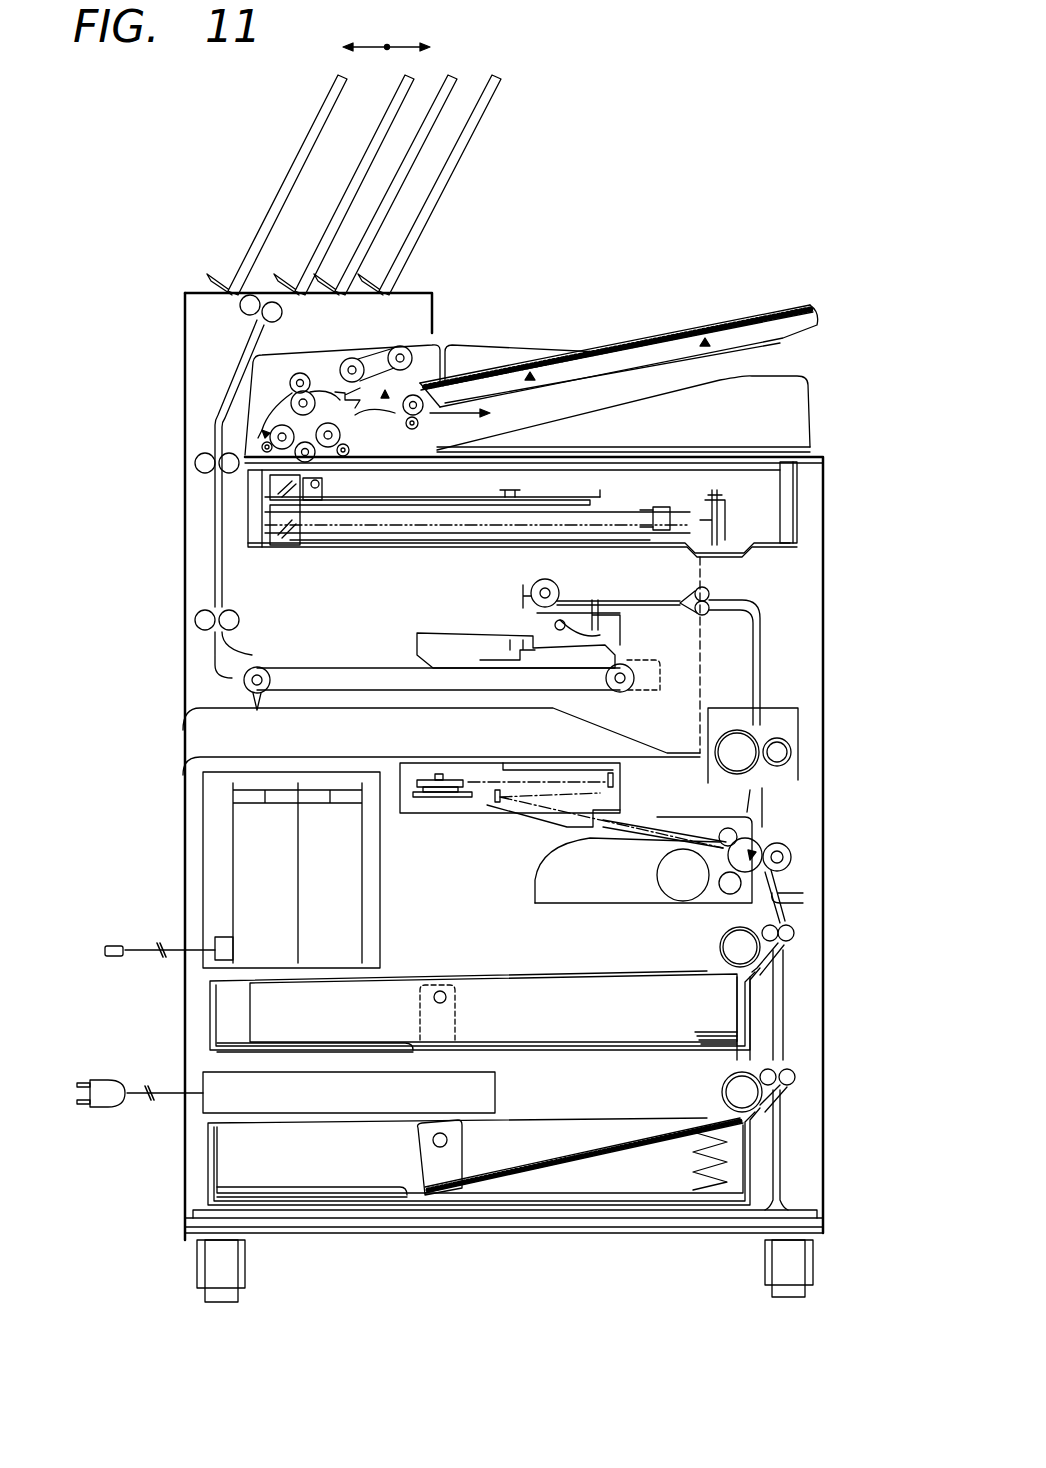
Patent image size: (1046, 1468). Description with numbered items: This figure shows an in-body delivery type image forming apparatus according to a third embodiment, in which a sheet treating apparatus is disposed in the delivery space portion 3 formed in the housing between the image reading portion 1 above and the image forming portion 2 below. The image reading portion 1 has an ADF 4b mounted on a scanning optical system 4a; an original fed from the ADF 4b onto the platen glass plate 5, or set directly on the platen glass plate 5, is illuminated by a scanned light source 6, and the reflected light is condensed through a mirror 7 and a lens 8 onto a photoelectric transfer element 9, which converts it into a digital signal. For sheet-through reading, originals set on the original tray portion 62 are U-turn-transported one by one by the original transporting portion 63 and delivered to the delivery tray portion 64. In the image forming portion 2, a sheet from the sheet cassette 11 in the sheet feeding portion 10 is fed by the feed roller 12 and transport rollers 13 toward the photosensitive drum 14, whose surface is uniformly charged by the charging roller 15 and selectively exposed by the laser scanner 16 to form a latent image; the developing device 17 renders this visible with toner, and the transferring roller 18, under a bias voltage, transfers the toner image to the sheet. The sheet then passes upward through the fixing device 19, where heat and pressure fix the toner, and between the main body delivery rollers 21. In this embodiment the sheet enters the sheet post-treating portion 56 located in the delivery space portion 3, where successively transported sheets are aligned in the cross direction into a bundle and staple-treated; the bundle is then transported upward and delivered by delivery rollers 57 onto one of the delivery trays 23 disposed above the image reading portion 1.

The image reading portion 1 is at (783, 493).
The image forming portion 2 is at (187, 855).
The delivery space portion 3 is at (262, 632).
The scanning optical system 4a is at (782, 477).
The ADF 4b is at (792, 390).
The platen glass plate 5 is at (573, 468).
The light source 6 is at (335, 490).
The mirror 7 is at (280, 487).
The lens 8 is at (660, 505).
The photoelectric transfer element 9 is at (712, 495).
The sheet feeding portion 10 is at (197, 1175).
The sheet cassette 11 is at (635, 1047).
The feed roller 12 is at (745, 947).
The transport rollers 13 is at (795, 932).
The photosensitive drum 14 is at (752, 848).
The charging roller 15 is at (720, 832).
The laser scanner 16 is at (527, 815).
The developing device 17 is at (728, 888).
The transferring roller 18 is at (793, 853).
The fixing device 19 is at (793, 723).
The delivery rollers 21 is at (709, 592).
The delivery trays 23 is at (483, 130).
The sheet post-treating portion 56 is at (580, 593).
The delivery rollers 57 is at (240, 305).
The original tray portion 62 is at (738, 330).
The original transporting portion 63 is at (373, 348).
The delivery tray portion 64 is at (598, 430).